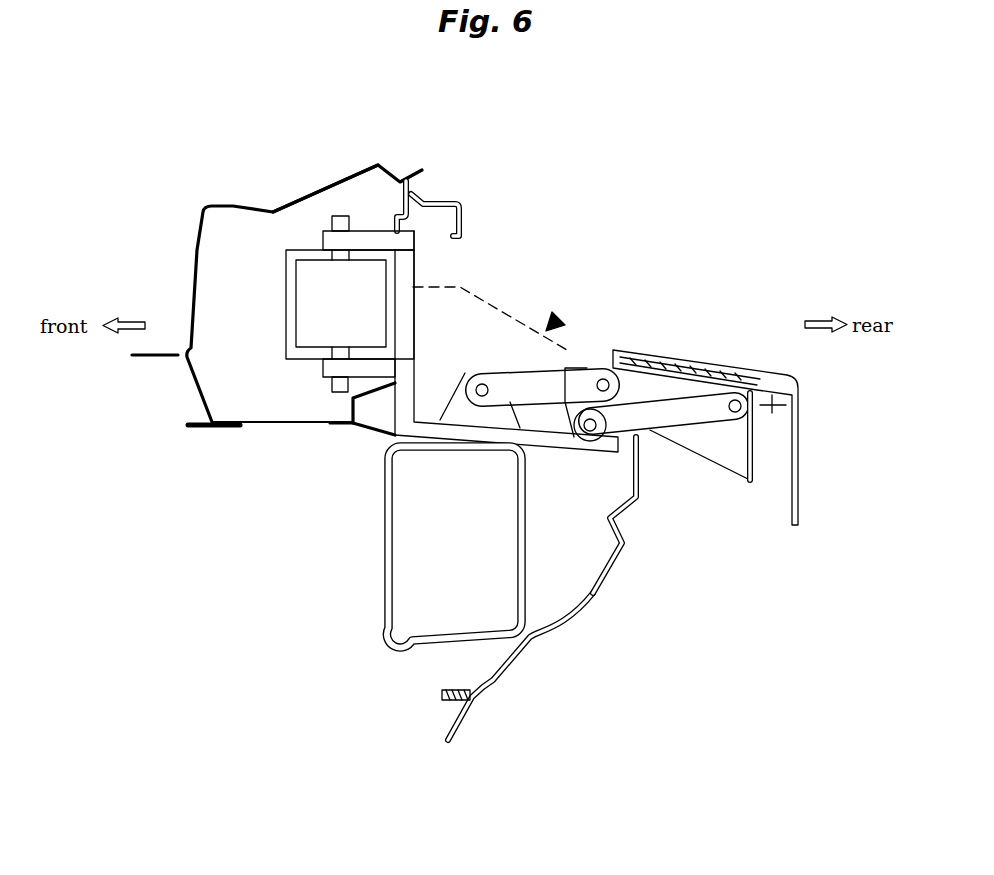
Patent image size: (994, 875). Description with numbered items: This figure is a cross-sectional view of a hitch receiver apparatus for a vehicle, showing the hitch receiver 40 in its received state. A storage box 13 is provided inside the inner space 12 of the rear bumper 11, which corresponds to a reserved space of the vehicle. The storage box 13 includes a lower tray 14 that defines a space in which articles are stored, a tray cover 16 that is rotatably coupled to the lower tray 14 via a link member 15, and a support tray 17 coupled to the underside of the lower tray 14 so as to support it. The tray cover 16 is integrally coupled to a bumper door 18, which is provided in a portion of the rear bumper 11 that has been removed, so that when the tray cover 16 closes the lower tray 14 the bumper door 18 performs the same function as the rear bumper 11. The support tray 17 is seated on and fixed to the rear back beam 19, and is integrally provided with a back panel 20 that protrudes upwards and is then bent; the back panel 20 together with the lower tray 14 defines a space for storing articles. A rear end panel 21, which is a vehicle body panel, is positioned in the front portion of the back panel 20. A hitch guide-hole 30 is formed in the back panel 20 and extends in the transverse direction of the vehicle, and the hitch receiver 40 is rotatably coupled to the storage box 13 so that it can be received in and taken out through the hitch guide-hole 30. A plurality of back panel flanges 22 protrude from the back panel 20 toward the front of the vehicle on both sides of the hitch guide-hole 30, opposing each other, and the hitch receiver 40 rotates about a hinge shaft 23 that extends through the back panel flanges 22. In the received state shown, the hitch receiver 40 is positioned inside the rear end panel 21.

The rear bumper 11 is at (450, 192).
The inner space 12 is at (582, 534).
The storage box 13 is at (556, 319).
The lower tray 14 is at (480, 323).
The link member 15 is at (553, 383).
The tray cover 16 is at (720, 448).
The support tray 17 is at (477, 432).
The bumper door 18 is at (800, 463).
The rear back beam 19 is at (388, 630).
The back panel 20 is at (402, 403).
The rear end panel 21 is at (253, 207).
The back panel flanges 22 is at (378, 234).
The hinge shaft 23 is at (328, 192).
The hitch guide-hole 30 is at (407, 268).
The hitch receiver 40 is at (288, 296).